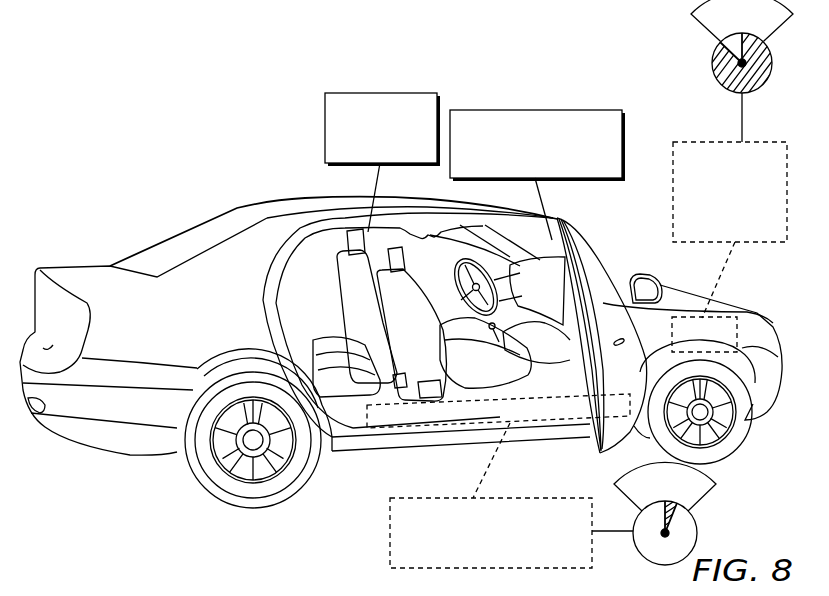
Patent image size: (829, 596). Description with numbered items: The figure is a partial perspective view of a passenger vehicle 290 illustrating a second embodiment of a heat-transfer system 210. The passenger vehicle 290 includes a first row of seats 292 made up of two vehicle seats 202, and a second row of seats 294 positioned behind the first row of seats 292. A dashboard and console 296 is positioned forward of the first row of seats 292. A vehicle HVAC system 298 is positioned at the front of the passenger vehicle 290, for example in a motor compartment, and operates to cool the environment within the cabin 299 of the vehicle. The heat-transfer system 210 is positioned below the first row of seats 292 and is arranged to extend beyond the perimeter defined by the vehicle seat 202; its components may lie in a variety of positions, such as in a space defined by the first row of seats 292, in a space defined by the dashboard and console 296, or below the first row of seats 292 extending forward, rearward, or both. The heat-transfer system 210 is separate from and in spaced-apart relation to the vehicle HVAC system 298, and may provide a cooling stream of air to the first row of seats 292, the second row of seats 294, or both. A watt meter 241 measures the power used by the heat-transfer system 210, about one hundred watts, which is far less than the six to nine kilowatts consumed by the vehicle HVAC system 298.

The passenger vehicle 290 is at (146, 219).
The second row of seats 294 is at (317, 328).
The first row of seats 292 is at (337, 248).
The vehicle seat 202 is at (380, 93).
The dashboard and console 296 is at (535, 110).
The cabin 299 is at (511, 253).
The vehicle HVAC system 298 is at (735, 140).
The heat-transfer system 210 is at (390, 530).
The watt meter 241 is at (712, 479).